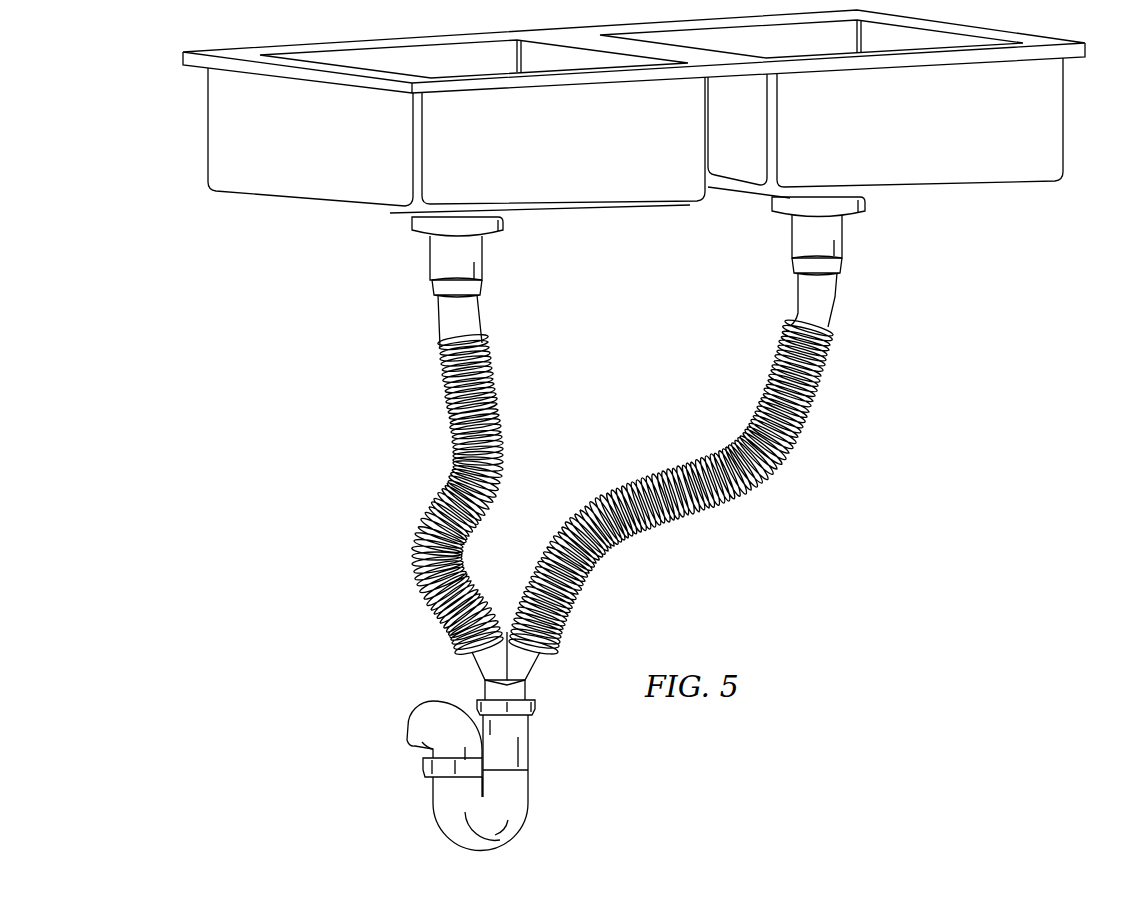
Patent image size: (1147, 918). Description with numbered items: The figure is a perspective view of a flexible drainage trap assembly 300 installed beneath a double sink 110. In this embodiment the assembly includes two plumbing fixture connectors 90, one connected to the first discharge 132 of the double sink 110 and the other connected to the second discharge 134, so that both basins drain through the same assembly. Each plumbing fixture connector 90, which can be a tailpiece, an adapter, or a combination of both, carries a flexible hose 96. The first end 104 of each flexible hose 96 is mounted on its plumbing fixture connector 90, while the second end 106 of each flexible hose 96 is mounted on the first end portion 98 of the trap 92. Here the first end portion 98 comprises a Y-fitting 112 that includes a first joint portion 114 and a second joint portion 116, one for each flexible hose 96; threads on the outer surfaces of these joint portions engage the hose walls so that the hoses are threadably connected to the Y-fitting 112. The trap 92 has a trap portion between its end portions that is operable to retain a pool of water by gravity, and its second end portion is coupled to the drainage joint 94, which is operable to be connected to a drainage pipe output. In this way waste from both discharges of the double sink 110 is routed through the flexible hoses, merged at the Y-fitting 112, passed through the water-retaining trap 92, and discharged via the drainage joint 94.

The double sink 110 is at (1064, 108).
The first discharge 132 is at (866, 197).
The second discharge 134 is at (420, 233).
The plumbing fixture connector 90 is at (438, 318).
The first end of flexible hose 104 is at (437, 349).
The flexible hose 96 is at (616, 482).
The second end of flexible hose 106 is at (512, 630).
The Y-fitting 112 is at (506, 670).
The first joint portion 114 is at (468, 669).
The second joint portion 116 is at (543, 664).
The first end portion 98 is at (537, 714).
The trap 92 is at (529, 803).
The drainage joint 94 is at (407, 732).
The flexible drainage trap assembly 300 is at (831, 607).